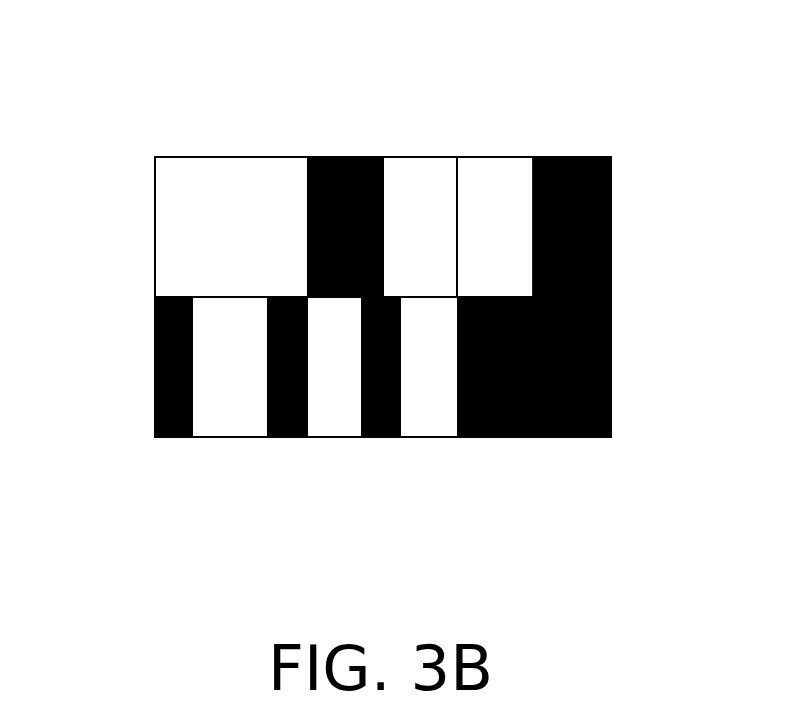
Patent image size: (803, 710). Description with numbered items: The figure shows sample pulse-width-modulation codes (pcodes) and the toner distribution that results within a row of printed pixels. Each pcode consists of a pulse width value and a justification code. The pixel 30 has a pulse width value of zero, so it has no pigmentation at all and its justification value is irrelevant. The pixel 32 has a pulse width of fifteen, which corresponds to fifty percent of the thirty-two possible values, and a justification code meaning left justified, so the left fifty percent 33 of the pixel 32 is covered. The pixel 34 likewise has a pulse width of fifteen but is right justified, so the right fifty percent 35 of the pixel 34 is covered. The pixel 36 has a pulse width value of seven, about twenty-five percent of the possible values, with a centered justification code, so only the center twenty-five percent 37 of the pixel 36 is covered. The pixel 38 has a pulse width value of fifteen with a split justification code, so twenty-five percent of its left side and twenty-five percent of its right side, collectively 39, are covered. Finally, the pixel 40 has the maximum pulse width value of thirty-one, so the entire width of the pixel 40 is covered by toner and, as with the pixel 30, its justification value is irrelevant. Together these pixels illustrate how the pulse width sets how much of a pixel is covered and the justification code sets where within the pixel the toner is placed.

The pixel 30 is at (155, 203).
The pixel 32 is at (410, 157).
The left fifty percent of the pixel 33 is at (307, 143).
The pixel 34 is at (611, 203).
The right fifty percent of the pixel 35 is at (535, 143).
The pixel 36 is at (420, 437).
The center twenty-five percent of the pixel 37 is at (400, 452).
The pixel 38 is at (155, 343).
The left and right side portions of the pixel 39 is at (305, 452).
The pixel 40 is at (611, 345).